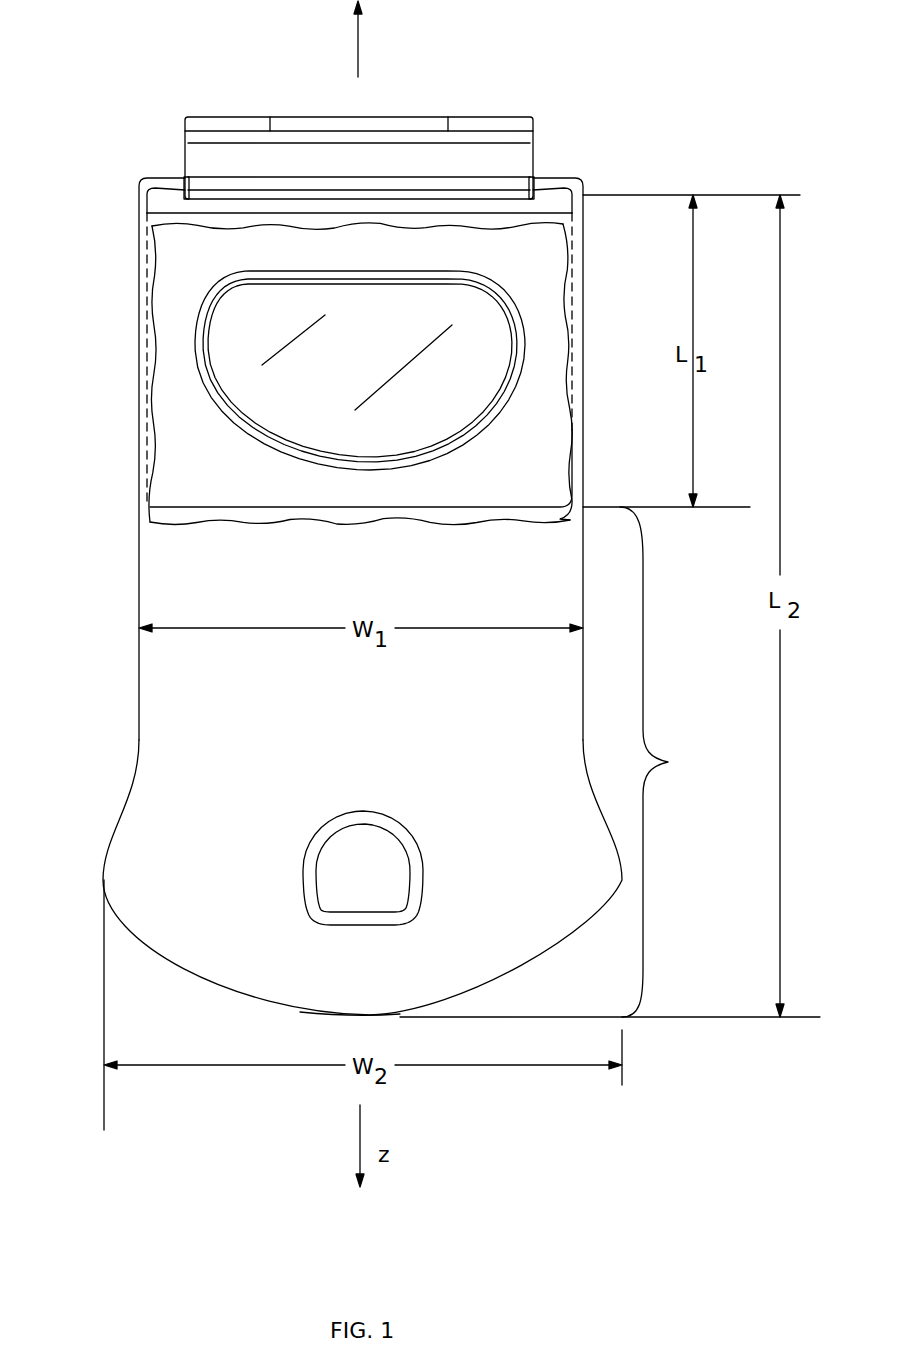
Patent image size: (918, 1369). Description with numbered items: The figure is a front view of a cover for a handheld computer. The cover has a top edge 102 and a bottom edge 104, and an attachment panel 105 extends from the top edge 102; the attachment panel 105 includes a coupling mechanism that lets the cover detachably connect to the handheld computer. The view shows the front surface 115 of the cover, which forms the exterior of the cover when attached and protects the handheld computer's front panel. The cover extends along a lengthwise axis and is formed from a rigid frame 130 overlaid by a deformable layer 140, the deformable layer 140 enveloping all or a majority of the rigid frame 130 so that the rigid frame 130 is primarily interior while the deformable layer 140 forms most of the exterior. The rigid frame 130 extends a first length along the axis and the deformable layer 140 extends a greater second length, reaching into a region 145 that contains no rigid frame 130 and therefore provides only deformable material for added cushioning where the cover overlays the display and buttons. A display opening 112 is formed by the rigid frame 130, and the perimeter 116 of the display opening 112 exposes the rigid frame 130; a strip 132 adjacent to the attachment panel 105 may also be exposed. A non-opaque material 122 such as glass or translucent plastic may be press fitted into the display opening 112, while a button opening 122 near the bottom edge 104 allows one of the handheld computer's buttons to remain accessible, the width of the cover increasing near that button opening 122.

The top edge 102 is at (162, 181).
The bottom edge 104 is at (376, 1018).
The attachment panel 105 is at (477, 117).
The display opening 112 is at (248, 377).
The front surface 115 is at (546, 890).
The perimeter 116 is at (258, 430).
The non-opaque material / button opening 122 is at (446, 418).
The rigid frame 130 is at (359, 369).
The strip 132 is at (548, 198).
The deformable layer 140 is at (232, 778).
The region 145 is at (668, 762).